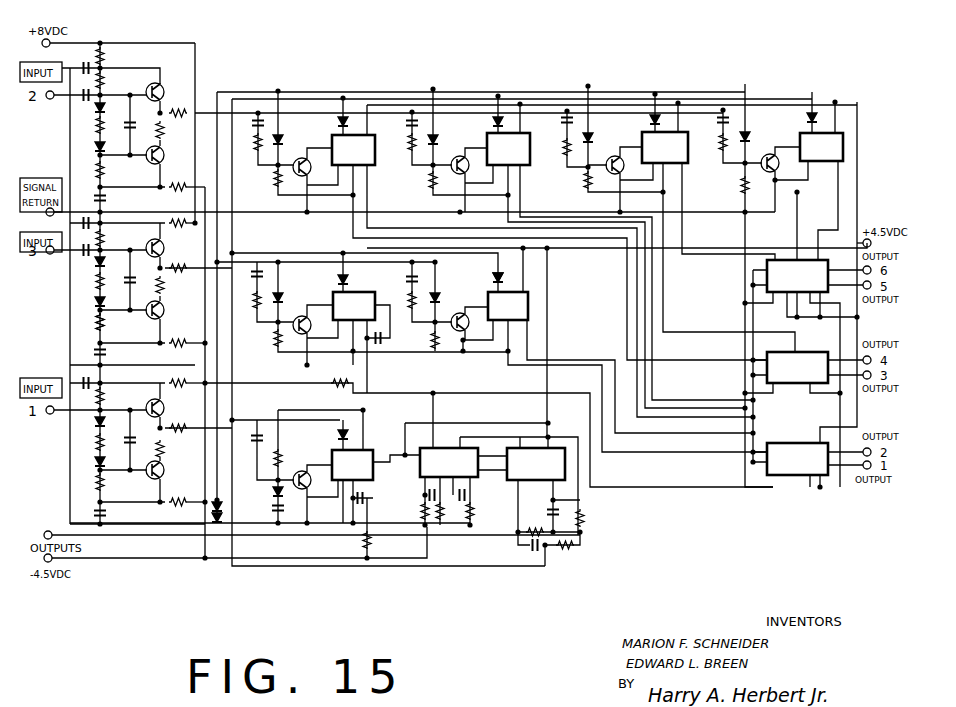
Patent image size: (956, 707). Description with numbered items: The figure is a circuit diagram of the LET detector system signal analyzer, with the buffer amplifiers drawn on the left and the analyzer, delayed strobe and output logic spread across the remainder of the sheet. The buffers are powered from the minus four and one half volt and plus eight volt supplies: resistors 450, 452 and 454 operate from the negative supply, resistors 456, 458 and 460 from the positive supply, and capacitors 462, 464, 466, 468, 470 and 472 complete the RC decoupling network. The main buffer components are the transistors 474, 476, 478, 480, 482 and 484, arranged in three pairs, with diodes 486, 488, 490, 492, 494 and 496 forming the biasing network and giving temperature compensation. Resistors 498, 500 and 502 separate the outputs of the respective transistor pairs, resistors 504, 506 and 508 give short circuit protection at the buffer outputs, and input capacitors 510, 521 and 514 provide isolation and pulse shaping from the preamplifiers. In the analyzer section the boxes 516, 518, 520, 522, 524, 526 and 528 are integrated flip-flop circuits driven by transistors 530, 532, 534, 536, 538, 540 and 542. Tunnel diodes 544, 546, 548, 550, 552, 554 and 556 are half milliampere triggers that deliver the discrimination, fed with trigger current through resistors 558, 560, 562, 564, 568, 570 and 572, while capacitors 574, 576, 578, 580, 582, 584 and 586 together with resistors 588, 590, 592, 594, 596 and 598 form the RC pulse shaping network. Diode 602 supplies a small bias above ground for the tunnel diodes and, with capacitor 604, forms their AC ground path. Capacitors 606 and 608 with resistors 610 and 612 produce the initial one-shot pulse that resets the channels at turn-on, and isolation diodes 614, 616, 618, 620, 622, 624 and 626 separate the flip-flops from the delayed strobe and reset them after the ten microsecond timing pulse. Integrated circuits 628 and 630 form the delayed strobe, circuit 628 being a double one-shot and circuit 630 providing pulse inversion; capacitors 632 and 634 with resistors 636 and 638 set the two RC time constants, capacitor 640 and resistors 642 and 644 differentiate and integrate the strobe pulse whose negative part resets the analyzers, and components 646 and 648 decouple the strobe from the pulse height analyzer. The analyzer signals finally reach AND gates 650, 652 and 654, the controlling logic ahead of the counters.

The resistor 450 is at (172, 190).
The resistor 452 is at (165, 350).
The resistor 454 is at (186, 508).
The resistor 456 is at (104, 52).
The resistor 458 is at (178, 220).
The resistor 460 is at (190, 358).
The capacitor 462 is at (82, 62).
The capacitor 464 is at (103, 186).
The capacitor 466 is at (78, 232).
The capacitor 468 is at (93, 352).
The capacitor 470 is at (78, 380).
The capacitor 472 is at (104, 512).
The transistor 474 is at (147, 88).
The transistor 476 is at (163, 165).
The transistor 478 is at (147, 244).
The transistor 480 is at (163, 305).
The transistor 482 is at (163, 410).
The transistor 484 is at (163, 475).
The diode 486 is at (95, 110).
The diode 488 is at (95, 149).
The diode 490 is at (95, 270).
The diode 492 is at (95, 303).
The diode 494 is at (95, 422).
The diode 496 is at (95, 462).
The resistor 498 is at (165, 136).
The resistor 500 is at (165, 288).
The resistor 502 is at (165, 456).
The resistor 504 is at (186, 110).
The resistor 506 is at (184, 264).
The resistor 508 is at (178, 434).
The capacitor 510 is at (78, 103).
The capacitor 514 is at (104, 406).
The integrated flip-flop circuit 516 is at (353, 150).
The integrated flip-flop circuit 518 is at (508, 149).
The integrated flip-flop circuit 520 is at (665, 147).
The capacitor 521 is at (78, 258).
The integrated flip-flop circuit 522 is at (821, 147).
The integrated flip-flop circuit 524 is at (354, 306).
The integrated flip-flop circuit 526 is at (508, 306).
The integrated flip-flop circuit 528 is at (352, 465).
The transistor 530 is at (300, 158).
The transistor 532 is at (462, 158).
The transistor 534 is at (636, 156).
The transistor 536 is at (766, 156).
The transistor 538 is at (328, 294).
The transistor 540 is at (466, 346).
The transistor 542 is at (284, 490).
The tunnel diode 544 is at (282, 130).
The tunnel diode 546 is at (440, 140).
The tunnel diode 548 is at (592, 132).
The tunnel diode 550 is at (770, 120).
The tunnel diode 552 is at (284, 298).
The tunnel diode 554 is at (470, 290).
The tunnel diode 556 is at (292, 490).
The resistor 558 is at (274, 184).
The resistor 560 is at (428, 182).
The resistor 562 is at (584, 182).
The resistor 564 is at (742, 186).
The resistor 568 is at (276, 342).
The resistor 570 is at (438, 348).
The resistor 572 is at (300, 450).
The capacitor 574 is at (254, 112).
The capacitor 576 is at (410, 110).
The capacitor 578 is at (566, 112).
The capacitor 580 is at (722, 112).
The capacitor 582 is at (260, 272).
The capacitor 584 is at (470, 266).
The capacitor 586 is at (262, 424).
The resistor 588 is at (255, 150).
The resistor 590 is at (408, 146).
The resistor 592 is at (562, 150).
The resistor 594 is at (720, 148).
The resistor 596 is at (254, 308).
The resistor 598 is at (409, 302).
The diode 602 is at (224, 508).
The capacitor 604 is at (283, 522).
The capacitor 606 is at (378, 342).
The capacitor 608 is at (366, 498).
The resistor 610 is at (354, 388).
The resistor 612 is at (370, 534).
The isolation diode 614 is at (346, 118).
The isolation diode 616 is at (496, 118).
The isolation diode 618 is at (660, 114).
The isolation diode 620 is at (814, 110).
The isolation diode 622 is at (350, 284).
The isolation diode 624 is at (512, 278).
The isolation diode 626 is at (350, 438).
The integrated circuit 628 is at (449, 462).
The integrated circuit 630 is at (536, 464).
The capacitor 632 is at (440, 522).
The capacitor 634 is at (468, 494).
The resistor 636 is at (422, 516).
The resistor 638 is at (474, 508).
The capacitor 640 is at (546, 504).
The resistor 642 is at (540, 520).
The resistor 644 is at (586, 518).
The decoupling component 646 is at (548, 560).
The decoupling component 648 is at (572, 548).
The AND gate 650 is at (815, 276).
The AND gate 652 is at (815, 367).
The AND gate 654 is at (815, 459).